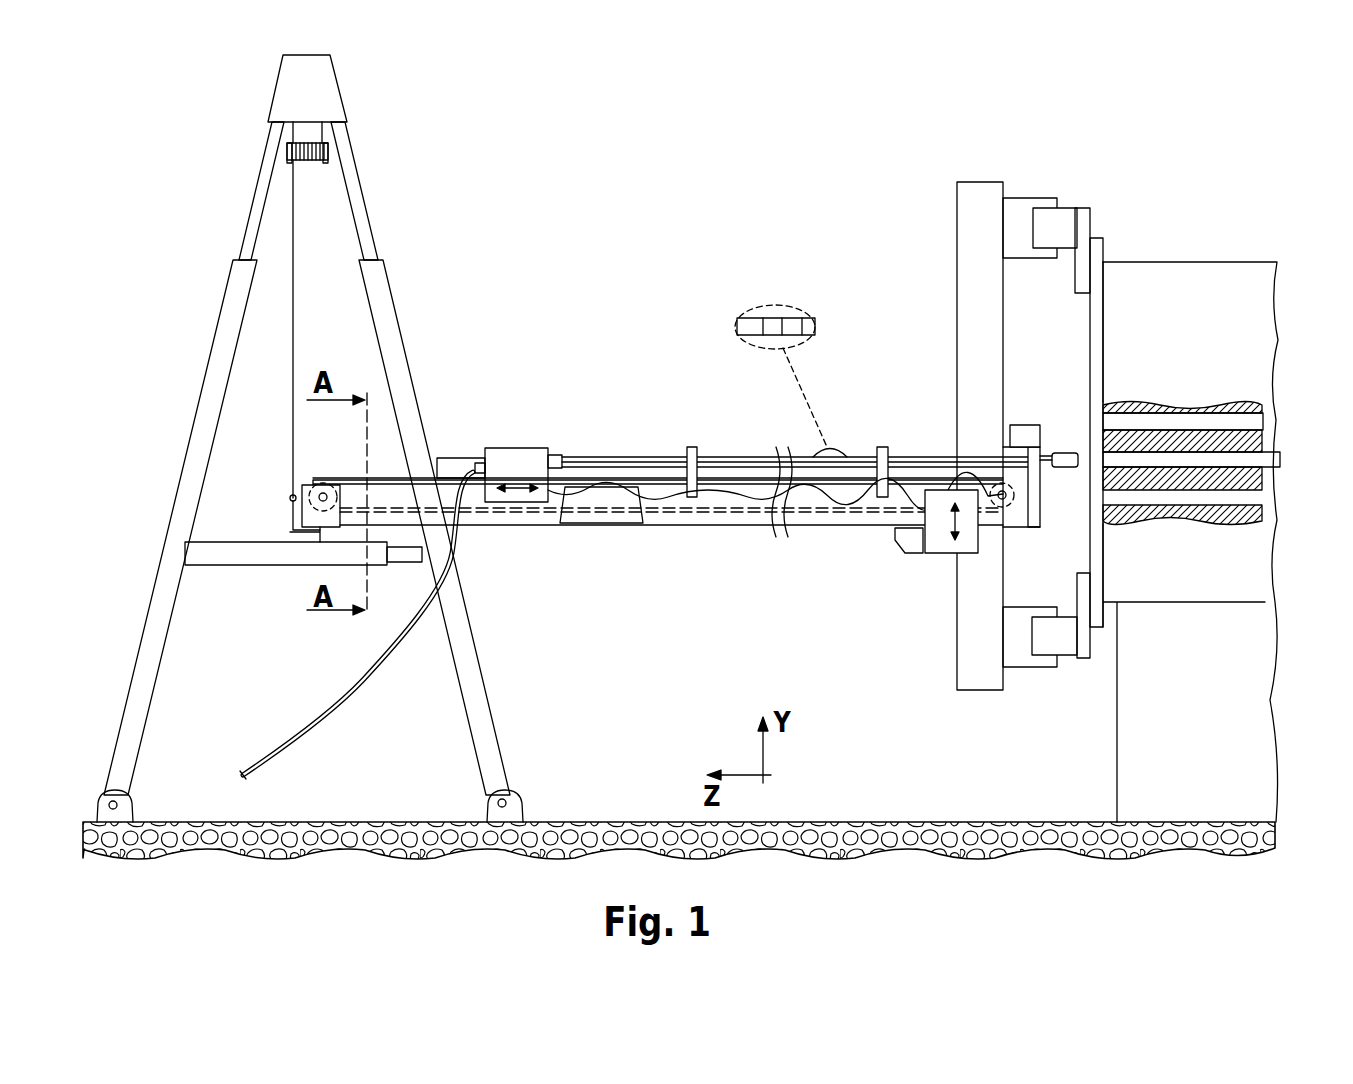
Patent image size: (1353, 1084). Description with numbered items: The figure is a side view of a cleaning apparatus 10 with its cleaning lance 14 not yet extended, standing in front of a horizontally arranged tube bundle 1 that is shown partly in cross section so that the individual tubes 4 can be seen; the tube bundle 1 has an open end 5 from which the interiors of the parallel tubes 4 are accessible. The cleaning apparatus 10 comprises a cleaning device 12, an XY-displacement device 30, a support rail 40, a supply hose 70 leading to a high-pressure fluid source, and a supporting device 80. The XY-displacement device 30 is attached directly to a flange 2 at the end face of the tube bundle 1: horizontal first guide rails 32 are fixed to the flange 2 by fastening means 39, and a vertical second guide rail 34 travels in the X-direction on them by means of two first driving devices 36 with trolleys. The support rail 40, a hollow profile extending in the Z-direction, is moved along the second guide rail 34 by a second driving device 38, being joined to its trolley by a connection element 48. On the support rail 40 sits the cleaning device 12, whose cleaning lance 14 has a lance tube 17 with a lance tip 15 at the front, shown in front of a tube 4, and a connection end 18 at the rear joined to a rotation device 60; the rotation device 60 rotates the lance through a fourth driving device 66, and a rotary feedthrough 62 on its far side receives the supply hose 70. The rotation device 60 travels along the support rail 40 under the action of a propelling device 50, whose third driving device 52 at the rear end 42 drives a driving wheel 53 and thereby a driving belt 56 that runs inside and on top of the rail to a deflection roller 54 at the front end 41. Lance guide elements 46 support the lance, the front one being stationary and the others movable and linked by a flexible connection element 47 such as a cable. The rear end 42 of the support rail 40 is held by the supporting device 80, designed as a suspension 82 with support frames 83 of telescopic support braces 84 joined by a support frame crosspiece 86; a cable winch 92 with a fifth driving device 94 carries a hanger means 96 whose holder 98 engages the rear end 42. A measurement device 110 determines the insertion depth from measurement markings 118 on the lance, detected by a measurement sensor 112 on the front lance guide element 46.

The tube bundle 1 is at (1203, 297).
The flange 2 is at (1097, 253).
The tubes 4 is at (1242, 420).
The open end 5 is at (1076, 429).
The cleaning apparatus 10 is at (705, 259).
The cleaning device 12 is at (580, 443).
The cleaning lance 14 is at (656, 446).
The lance tip 15 is at (1057, 453).
The lance tube 17 is at (620, 460).
The connection end 18 is at (553, 457).
The XY-displacement device 30 is at (931, 247).
The first guide rail 32 is at (1055, 230).
The second guide rail 34 is at (982, 208).
The first driving device 36 is at (1018, 217).
The second driving device 38 is at (937, 533).
The fastening means 39 is at (1083, 228).
The support rail 40 is at (687, 527).
The front end 41 is at (1030, 540).
The rear end 42 is at (313, 546).
The lance guide element 46 is at (693, 457).
The flexible connection element 47 is at (757, 513).
The connection element 48 is at (900, 545).
The propelling device 50 is at (331, 474).
The third driving device 52 is at (318, 505).
The driving wheel 53 is at (318, 537).
The deflection roller 54 is at (1013, 490).
The driving belt 56 is at (380, 480).
The rotation device 60 is at (520, 460).
The rotary feedthrough 62 is at (478, 465).
The fourth driving device 66 is at (450, 467).
The supply hose 70 is at (363, 690).
The supporting device 80 is at (438, 185).
The suspension 82 is at (325, 438).
The support frame 83 is at (204, 320).
The support brace 84 is at (190, 485).
The support frame crosspiece 86 is at (223, 556).
The cable winch 92 is at (330, 152).
The fifth driving device 94 is at (300, 131).
The hanger means 96 is at (296, 330).
The holder 98 is at (288, 520).
The measurement device 110 is at (778, 320).
The measurement sensor 112 is at (1025, 436).
The measurement markings 118 is at (781, 376).